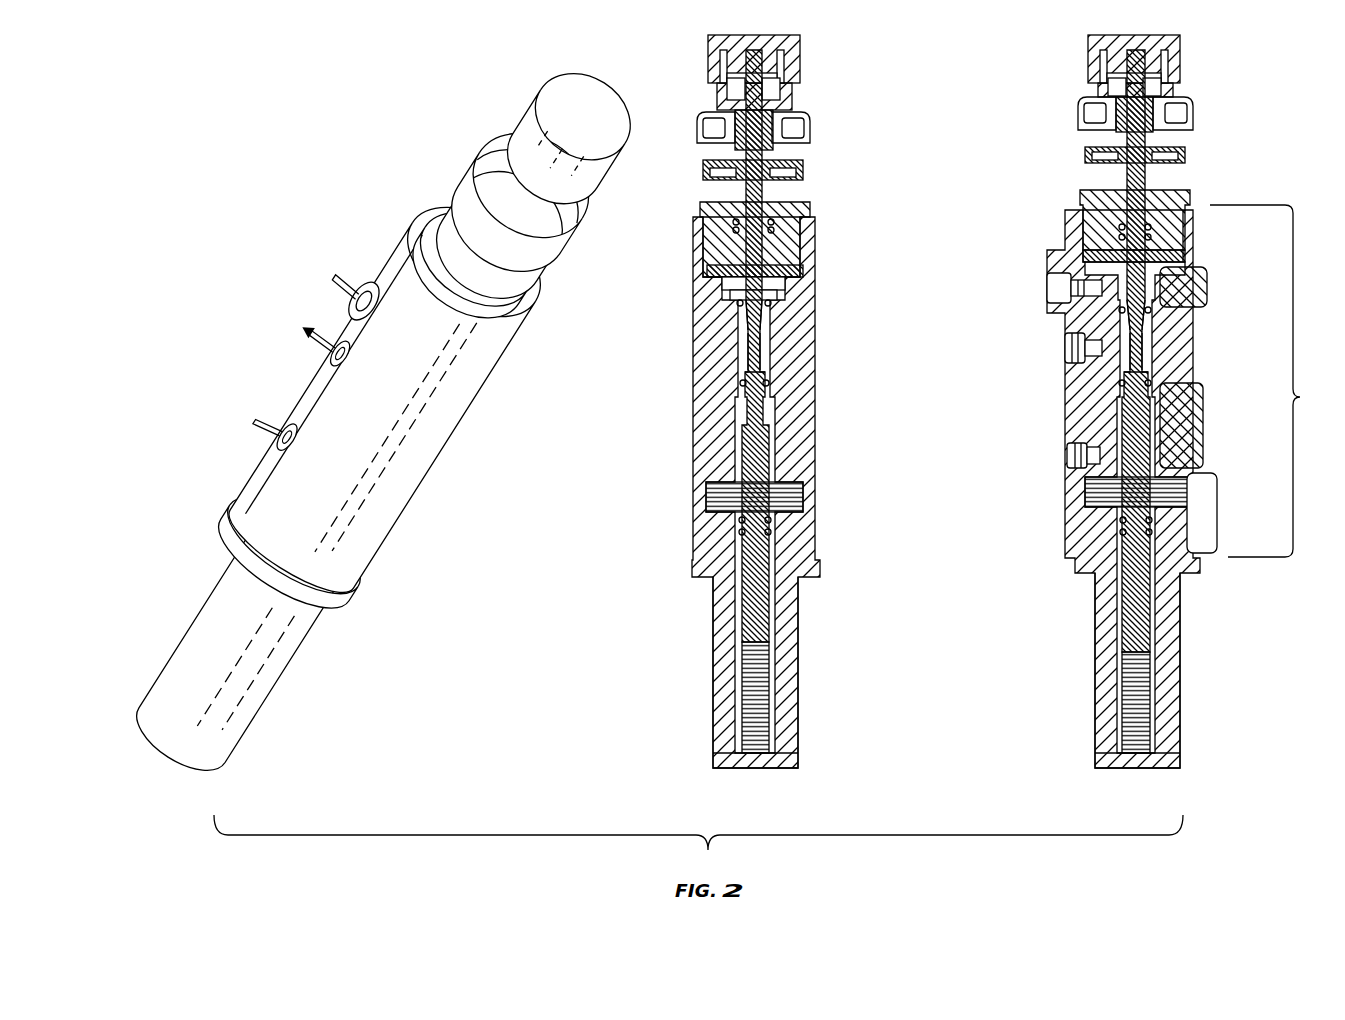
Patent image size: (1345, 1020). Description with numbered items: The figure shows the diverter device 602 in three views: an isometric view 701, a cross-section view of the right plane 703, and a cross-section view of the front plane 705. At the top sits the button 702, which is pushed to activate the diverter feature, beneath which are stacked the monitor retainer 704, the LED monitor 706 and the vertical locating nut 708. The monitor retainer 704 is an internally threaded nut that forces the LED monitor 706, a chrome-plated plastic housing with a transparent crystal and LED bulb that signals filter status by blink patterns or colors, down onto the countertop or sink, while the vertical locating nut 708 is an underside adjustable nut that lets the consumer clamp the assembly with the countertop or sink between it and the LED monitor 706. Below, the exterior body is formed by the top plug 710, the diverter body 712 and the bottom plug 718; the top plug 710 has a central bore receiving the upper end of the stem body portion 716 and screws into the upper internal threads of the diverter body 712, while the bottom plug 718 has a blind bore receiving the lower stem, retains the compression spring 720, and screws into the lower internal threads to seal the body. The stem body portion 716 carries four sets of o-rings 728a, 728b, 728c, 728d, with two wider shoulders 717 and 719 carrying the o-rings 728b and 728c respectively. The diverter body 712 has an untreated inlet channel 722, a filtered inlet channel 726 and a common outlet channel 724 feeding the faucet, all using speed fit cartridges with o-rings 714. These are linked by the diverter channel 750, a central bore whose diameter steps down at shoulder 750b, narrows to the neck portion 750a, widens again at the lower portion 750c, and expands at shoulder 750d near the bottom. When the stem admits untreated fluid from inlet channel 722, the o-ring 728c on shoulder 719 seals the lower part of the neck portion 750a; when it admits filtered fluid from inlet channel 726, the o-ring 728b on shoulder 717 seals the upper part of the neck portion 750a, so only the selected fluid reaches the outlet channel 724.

The diverter device 602 is at (391, 418).
The isometric view 701 is at (202, 768).
The button 702 is at (797, 46).
The cross-section view of the right plane 703 is at (754, 768).
The monitor retainer 704 is at (788, 99).
The cross-section view of the front plane 705 is at (1137, 768).
The LED monitor 706 is at (806, 129).
The vertical locating nut 708 is at (803, 169).
The top plug 710 is at (806, 205).
The diverter body 712 is at (810, 285).
The o-rings 714 is at (1048, 295).
The stem body portion 716 is at (767, 443).
The shoulder 717 is at (760, 313).
The bottom plug 718 is at (792, 606).
The shoulder 719 is at (767, 376).
The compression spring 720 is at (767, 684).
The untreated inlet channel 722 is at (338, 292).
The outlet channel 724 is at (309, 339).
The filtered inlet channel 726 is at (262, 427).
The sealing engagement 728a is at (735, 222).
The sealing engagement 728b is at (737, 303).
The sealing engagement 728c is at (740, 383).
The sealing engagement 728d is at (739, 520).
The diverter channel 750 is at (1274, 381).
The neck portion 750a is at (772, 351).
The shoulder 750b is at (1207, 287).
The lower portion 750c is at (1204, 428).
The shoulder 750d is at (1217, 512).